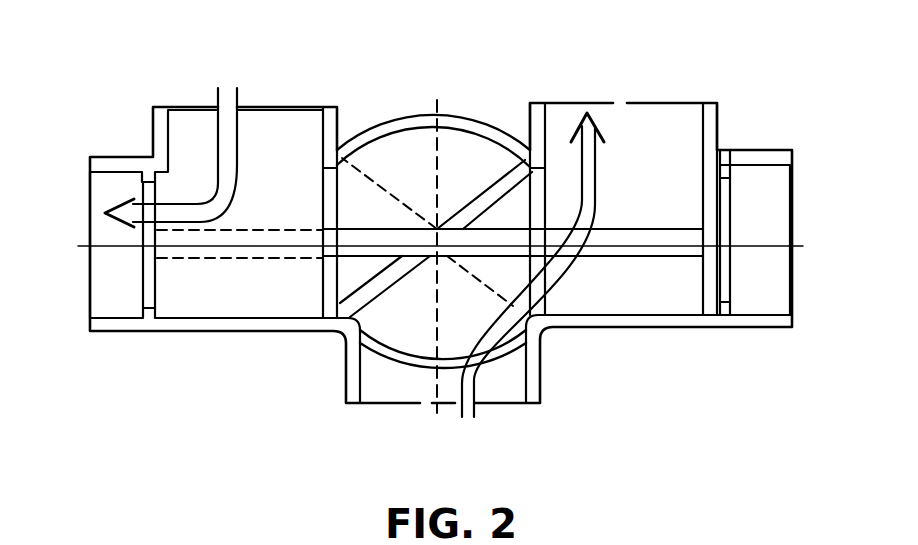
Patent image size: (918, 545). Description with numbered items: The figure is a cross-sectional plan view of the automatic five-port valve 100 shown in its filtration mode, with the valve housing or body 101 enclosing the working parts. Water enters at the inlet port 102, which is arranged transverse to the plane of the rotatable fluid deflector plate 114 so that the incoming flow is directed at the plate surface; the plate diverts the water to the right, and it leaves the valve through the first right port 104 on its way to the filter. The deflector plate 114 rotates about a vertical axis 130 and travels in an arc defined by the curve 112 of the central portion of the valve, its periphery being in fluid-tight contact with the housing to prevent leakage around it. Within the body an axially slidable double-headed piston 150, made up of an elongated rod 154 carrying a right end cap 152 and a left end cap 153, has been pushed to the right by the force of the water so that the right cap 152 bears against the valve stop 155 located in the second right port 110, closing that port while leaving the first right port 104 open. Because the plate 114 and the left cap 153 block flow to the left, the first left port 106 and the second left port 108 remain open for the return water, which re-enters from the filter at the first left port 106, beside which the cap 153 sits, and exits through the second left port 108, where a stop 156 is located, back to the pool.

The valve 100 is at (646, 62).
The valve body 101 is at (747, 331).
The inlet port 102 is at (505, 408).
The first right port 104 is at (562, 103).
The first left port 106 is at (181, 106).
The second left port 108 is at (89, 289).
The second right port 110 is at (801, 300).
The curve 112 is at (386, 114).
The fluid deflector plate 114 is at (467, 195).
The vertical axis 130 is at (437, 228).
The slidable piston 150 is at (658, 233).
The right end cap 152 is at (712, 205).
The left end cap 153 is at (328, 194).
The elongated rod 154 is at (620, 231).
The valve stop 155 is at (728, 168).
The stop 156 is at (148, 177).